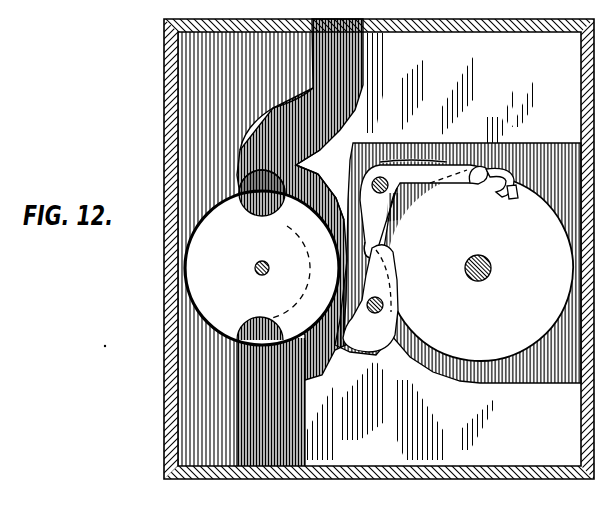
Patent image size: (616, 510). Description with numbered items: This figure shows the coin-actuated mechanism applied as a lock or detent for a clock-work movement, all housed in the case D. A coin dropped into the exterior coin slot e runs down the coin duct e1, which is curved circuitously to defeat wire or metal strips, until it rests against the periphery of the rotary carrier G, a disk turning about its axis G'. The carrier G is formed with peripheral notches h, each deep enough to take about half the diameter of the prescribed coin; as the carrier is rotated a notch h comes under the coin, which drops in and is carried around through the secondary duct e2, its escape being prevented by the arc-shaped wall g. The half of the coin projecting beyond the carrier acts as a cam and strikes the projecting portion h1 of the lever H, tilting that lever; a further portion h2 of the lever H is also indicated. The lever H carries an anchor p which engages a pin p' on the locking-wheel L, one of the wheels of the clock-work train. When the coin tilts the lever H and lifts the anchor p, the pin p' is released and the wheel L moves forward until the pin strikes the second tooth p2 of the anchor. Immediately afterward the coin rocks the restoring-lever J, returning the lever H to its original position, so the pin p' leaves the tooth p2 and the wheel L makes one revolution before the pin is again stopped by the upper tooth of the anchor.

The case D is at (366, 249).
The coin slot e is at (300, 190).
The coin duct e1 is at (276, 119).
The secondary duct e2 is at (331, 197).
The arc-shaped wall g is at (304, 166).
The peripheral notch h is at (258, 213).
The rotary carrier G is at (262, 268).
The wheel hub / axis G' is at (276, 271).
The lever H is at (423, 209).
The projecting portion of lever h1 is at (366, 253).
The lever link h2 is at (448, 183).
The restoring-lever J is at (370, 298).
The locking-wheel L is at (480, 268).
The anchor p is at (474, 176).
The pin p' is at (489, 189).
The second tooth of anchor p2 is at (522, 197).